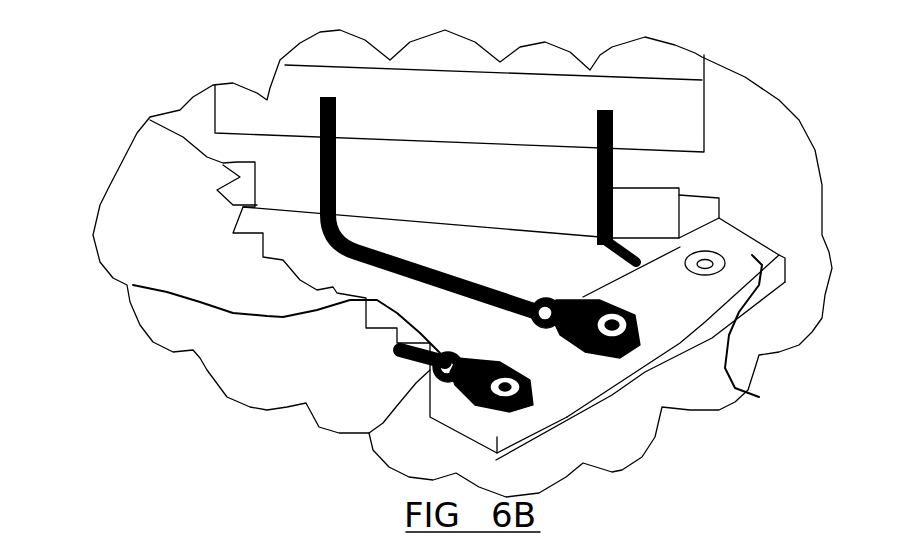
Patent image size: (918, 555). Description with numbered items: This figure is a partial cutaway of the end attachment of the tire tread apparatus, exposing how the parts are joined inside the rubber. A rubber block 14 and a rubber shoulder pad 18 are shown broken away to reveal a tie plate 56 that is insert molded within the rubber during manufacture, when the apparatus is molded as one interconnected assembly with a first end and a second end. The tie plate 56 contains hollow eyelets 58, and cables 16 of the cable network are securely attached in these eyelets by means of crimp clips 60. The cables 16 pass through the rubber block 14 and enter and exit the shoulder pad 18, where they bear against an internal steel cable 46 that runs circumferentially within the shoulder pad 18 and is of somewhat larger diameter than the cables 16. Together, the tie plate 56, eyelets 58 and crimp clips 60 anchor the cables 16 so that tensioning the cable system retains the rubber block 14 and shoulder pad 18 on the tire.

The rubber blocks 14 is at (550, 76).
The cables 16 is at (606, 204).
The rubber shoulder pad 18 is at (425, 263).
The internal steel cable 46 is at (567, 424).
The tie plates 56 is at (579, 324).
The hollow eyelets 58 is at (644, 360).
The crimp clips 60 is at (246, 317).